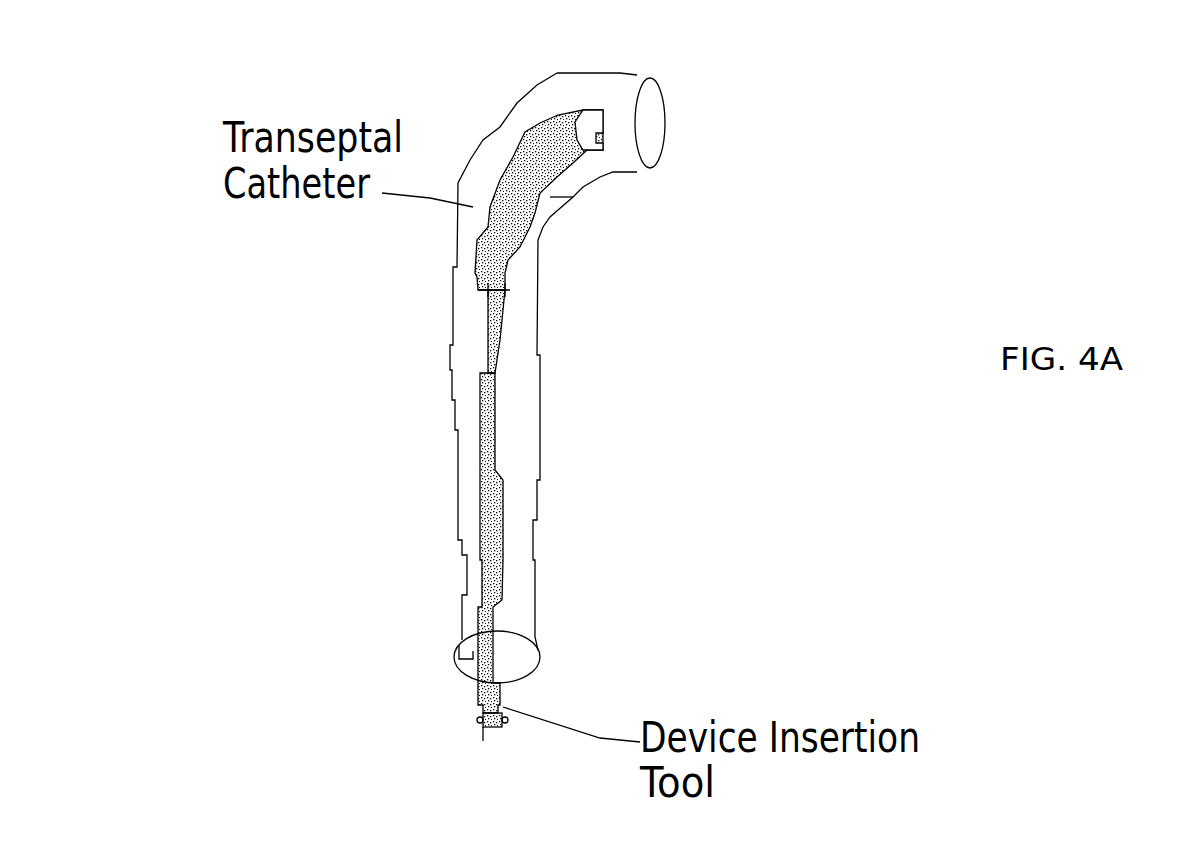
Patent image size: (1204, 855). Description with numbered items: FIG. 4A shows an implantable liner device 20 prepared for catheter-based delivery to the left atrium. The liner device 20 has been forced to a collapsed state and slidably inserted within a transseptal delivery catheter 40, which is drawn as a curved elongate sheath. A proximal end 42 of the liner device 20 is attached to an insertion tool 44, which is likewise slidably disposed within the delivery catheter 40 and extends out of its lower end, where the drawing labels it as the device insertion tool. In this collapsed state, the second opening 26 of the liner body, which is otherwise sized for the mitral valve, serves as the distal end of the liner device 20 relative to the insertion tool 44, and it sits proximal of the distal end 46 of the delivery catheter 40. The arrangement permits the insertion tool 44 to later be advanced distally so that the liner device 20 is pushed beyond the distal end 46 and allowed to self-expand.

The liner device 20 is at (505, 148).
The second opening 26 is at (592, 108).
The distal end of the delivery catheter 46 is at (648, 77).
The delivery catheter 40 is at (450, 380).
The proximal end 42 is at (495, 288).
The insertion tool 44 is at (497, 440).